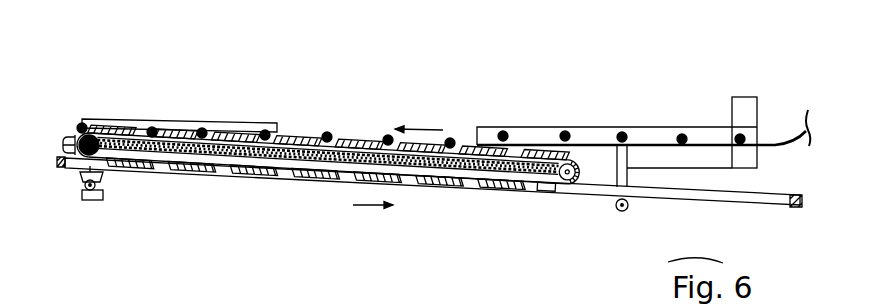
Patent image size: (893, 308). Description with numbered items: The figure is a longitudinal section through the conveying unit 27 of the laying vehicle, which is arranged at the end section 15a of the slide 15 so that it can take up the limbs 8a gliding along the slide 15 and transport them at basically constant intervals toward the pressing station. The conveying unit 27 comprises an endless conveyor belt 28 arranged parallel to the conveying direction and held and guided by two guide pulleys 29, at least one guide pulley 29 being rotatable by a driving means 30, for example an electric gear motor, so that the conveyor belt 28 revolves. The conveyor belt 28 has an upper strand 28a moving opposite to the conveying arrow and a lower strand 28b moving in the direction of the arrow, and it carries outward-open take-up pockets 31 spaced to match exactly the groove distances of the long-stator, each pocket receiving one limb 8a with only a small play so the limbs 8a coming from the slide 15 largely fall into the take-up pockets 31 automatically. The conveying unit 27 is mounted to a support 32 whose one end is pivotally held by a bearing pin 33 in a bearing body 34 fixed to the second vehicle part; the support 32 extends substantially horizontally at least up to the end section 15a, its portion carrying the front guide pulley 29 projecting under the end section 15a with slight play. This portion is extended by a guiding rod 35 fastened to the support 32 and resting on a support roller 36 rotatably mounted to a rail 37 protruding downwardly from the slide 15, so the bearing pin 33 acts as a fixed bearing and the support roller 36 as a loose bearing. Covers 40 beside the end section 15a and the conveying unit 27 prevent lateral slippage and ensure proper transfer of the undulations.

The conveying unit 27 is at (433, 83).
The endless conveyor belt 28 is at (253, 178).
The upper strand 28a is at (355, 133).
The lower strand 28b is at (315, 182).
The guide pulley 29 is at (560, 187).
The driving means 30 is at (102, 118).
The take-up pockets 31 is at (412, 178).
The support 32 is at (55, 167).
The bearing pin 33 is at (100, 185).
The bearing body 34 is at (90, 200).
The guiding rod 35 is at (722, 196).
The support roller 36 is at (628, 209).
The rail 37 is at (617, 172).
The covers 40 is at (242, 130).
The slide 15 is at (588, 142).
The end section 15a is at (491, 128).
The limbs 8a is at (202, 133).